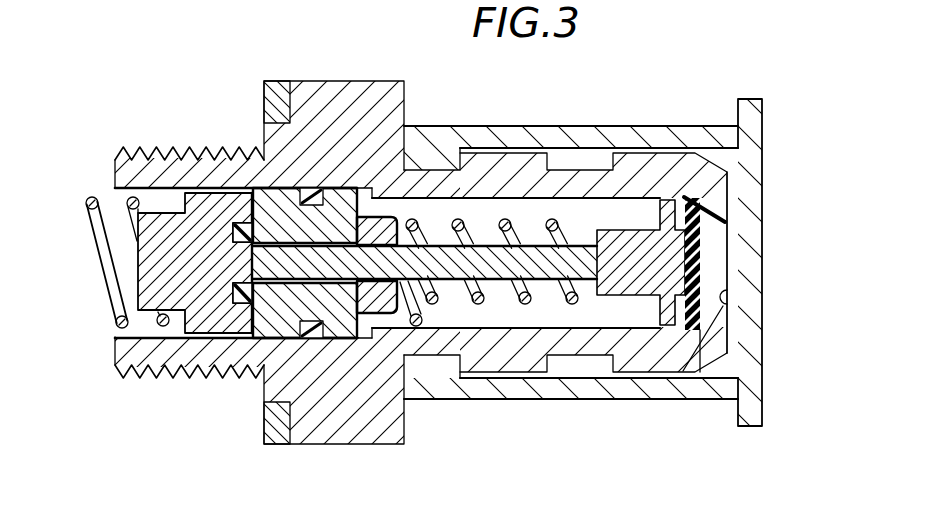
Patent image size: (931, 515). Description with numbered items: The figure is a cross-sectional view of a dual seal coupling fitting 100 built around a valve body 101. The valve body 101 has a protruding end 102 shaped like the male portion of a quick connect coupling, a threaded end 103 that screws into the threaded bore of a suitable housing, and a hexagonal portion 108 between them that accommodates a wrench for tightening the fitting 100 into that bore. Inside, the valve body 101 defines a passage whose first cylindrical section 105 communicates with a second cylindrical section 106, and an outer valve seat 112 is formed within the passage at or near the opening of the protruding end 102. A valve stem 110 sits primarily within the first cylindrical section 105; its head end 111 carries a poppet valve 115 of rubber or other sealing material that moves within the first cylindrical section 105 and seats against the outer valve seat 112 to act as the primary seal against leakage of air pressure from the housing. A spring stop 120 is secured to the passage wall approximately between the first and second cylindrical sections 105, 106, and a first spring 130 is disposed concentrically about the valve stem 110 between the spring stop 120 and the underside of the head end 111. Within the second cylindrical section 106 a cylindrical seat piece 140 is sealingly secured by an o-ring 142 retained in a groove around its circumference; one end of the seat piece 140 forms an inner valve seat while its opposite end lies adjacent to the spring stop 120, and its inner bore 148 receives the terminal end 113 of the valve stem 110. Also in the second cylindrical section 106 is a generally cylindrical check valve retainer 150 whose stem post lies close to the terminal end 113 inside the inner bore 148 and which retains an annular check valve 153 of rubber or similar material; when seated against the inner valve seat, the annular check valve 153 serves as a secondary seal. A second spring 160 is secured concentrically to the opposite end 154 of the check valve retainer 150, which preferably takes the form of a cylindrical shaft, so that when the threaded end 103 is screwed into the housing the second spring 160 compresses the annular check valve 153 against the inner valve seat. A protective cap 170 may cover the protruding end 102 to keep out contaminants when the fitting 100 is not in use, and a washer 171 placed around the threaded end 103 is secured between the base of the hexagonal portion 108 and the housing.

The dual seal coupling fitting 100 is at (786, 261).
The valve body 101 is at (316, 80).
The protruding end 102 is at (577, 168).
The threaded end 103 is at (148, 378).
The first cylindrical section 105 is at (530, 208).
The second cylindrical section 106 is at (162, 200).
The hexagonal portion 108 is at (374, 444).
The valve stem 110 is at (500, 264).
The head end 111 is at (668, 306).
The outer valve seat 112 is at (720, 293).
The terminal end 113 is at (398, 210).
The poppet valve 115 is at (690, 215).
The spring stop 120 is at (407, 309).
The first spring 130 is at (572, 304).
The cylindrical seat piece 140 is at (336, 206).
The o-ring 142 is at (305, 340).
The inner bore 148 is at (267, 240).
The check valve retainer 150 is at (228, 322).
The annular check valve 153 is at (250, 284).
The opposite end 154 is at (138, 230).
The second spring 160 is at (88, 202).
The protective cap 170 is at (752, 99).
The washer 171 is at (278, 424).